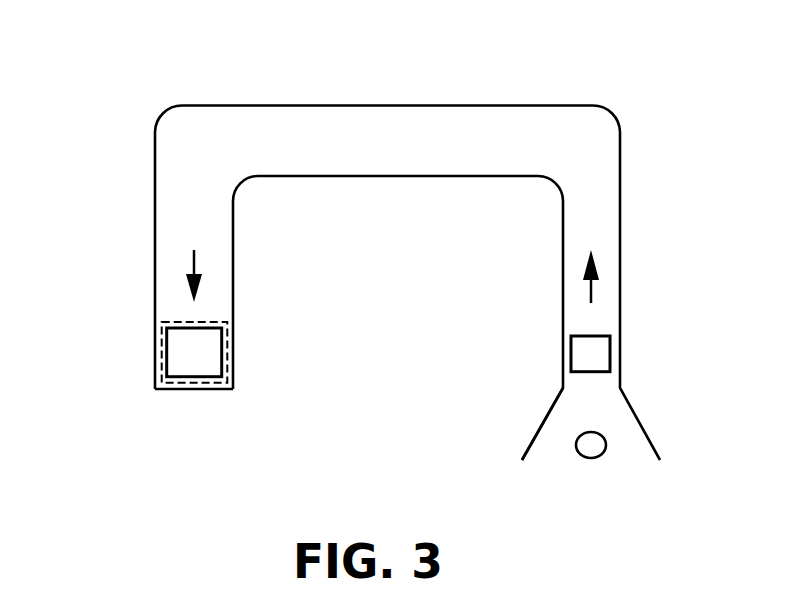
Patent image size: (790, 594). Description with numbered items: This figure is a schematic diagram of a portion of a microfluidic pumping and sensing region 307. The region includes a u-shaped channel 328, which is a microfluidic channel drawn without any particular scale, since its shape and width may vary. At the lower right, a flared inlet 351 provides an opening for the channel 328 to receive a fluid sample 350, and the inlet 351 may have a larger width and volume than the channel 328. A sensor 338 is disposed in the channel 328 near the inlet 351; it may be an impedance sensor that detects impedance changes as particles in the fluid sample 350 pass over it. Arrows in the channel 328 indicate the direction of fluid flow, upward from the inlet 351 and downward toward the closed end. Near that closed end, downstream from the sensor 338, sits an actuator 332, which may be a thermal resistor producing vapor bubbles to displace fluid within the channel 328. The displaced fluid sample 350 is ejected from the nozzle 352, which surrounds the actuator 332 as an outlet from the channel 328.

The microfluidic pumping and sensing region 307 is at (121, 51).
The channel 328 is at (397, 176).
The actuator 332 is at (222, 348).
The nozzle 352 is at (161, 347).
The sensor 338 is at (610, 350).
The inlet 351 is at (544, 418).
The fluid sample 350 is at (605, 442).